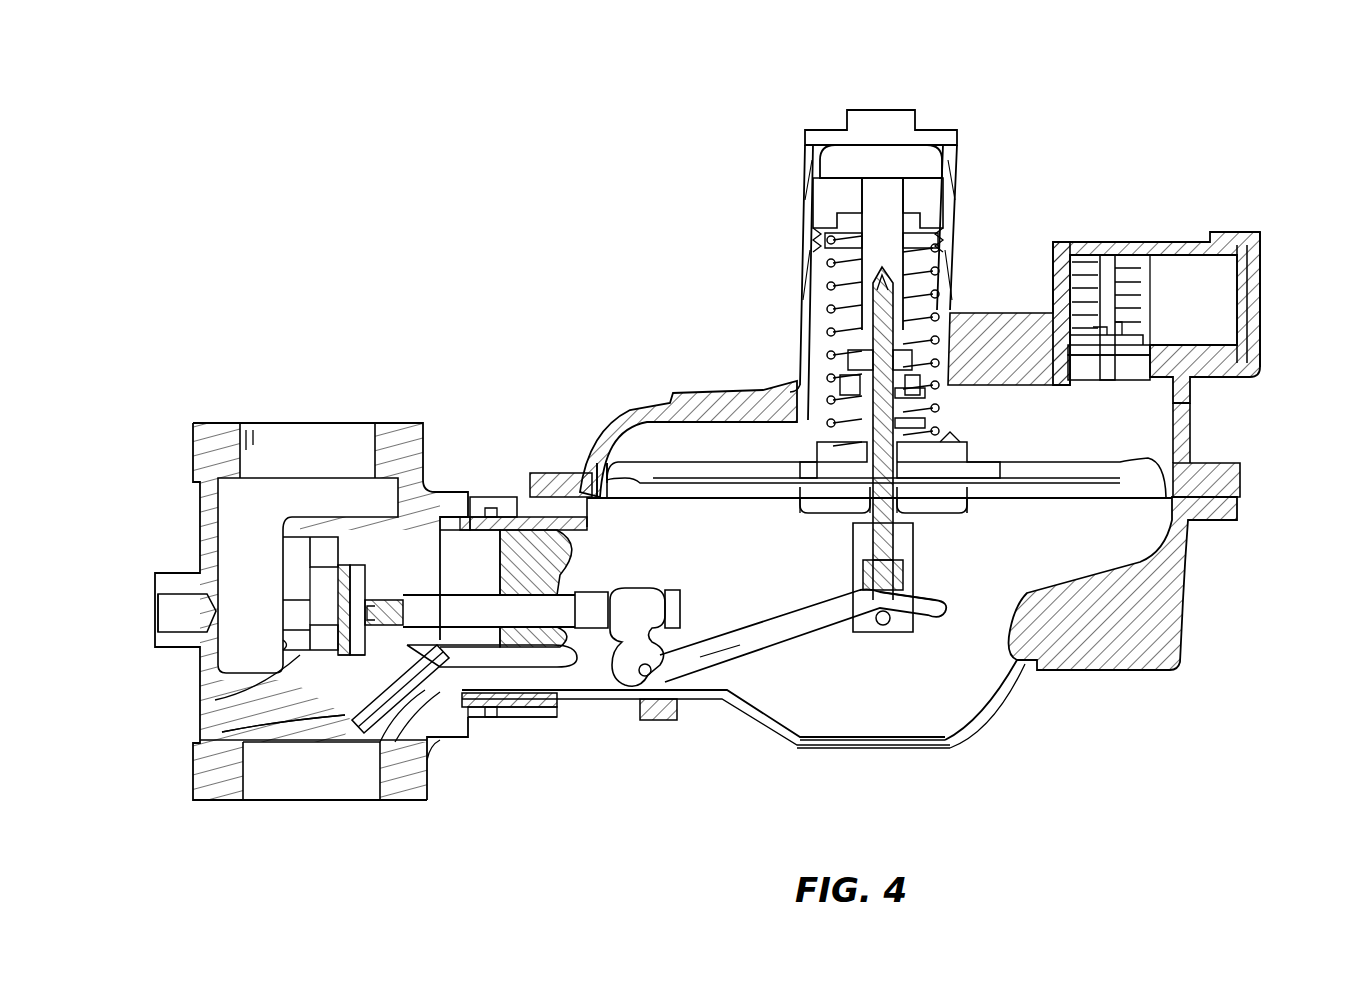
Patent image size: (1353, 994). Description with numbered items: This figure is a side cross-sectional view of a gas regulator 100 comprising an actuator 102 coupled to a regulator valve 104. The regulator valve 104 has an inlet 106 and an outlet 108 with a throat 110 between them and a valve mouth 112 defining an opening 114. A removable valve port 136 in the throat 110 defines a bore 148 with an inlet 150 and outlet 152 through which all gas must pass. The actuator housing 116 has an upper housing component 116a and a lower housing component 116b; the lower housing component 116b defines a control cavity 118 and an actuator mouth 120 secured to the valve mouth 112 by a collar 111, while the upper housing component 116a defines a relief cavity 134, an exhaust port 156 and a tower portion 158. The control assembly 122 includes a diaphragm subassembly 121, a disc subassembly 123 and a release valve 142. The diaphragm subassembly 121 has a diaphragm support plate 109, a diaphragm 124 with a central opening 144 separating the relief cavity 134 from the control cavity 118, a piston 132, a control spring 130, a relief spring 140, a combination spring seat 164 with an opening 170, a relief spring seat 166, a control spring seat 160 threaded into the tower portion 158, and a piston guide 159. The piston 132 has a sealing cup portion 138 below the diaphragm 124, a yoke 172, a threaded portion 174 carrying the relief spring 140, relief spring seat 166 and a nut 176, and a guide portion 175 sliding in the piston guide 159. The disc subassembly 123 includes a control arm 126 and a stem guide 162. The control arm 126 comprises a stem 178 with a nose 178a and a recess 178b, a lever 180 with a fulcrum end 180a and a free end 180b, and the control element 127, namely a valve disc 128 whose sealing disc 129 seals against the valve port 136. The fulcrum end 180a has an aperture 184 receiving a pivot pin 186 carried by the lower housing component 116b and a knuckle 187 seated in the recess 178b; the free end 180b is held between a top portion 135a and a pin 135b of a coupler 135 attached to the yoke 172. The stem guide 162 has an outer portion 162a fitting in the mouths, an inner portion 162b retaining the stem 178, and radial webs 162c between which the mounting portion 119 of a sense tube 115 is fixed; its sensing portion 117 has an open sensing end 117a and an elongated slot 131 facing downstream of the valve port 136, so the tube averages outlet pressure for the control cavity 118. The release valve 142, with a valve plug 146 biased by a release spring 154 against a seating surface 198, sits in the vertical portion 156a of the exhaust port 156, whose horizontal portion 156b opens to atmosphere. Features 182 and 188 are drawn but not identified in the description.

The gas regulator 100 is at (989, 107).
The actuator 102 is at (963, 186).
The regulator valve 104 is at (425, 417).
The inlet 106 is at (255, 445).
The outlet 108 is at (256, 775).
The diaphragm support plate 109 is at (720, 467).
The throat 110 is at (220, 697).
The collar 111 is at (490, 497).
The valve mouth 112 is at (440, 760).
The opening 114 is at (445, 560).
The sense tube 115 is at (422, 730).
The housing 116 is at (1180, 627).
The upper housing component 116a is at (805, 178).
The lower housing component 116b is at (958, 737).
The sensing portion 117 is at (445, 725).
The sensing end 117a is at (340, 737).
The control cavity 118 is at (985, 665).
The mounting portion 119 is at (520, 730).
The actuator mouth 120 is at (567, 730).
The diaphragm subassembly 121 is at (705, 499).
The control assembly 122 is at (955, 519).
The disc subassembly 123 is at (485, 712).
The diaphragm 124 is at (1160, 470).
The control arm 126 is at (642, 587).
The control element 127 is at (398, 745).
The valve disc 128 is at (358, 565).
The sealing disc 129 is at (358, 612).
The control spring 130 is at (863, 282).
The slot 131 is at (392, 712).
The piston 132 is at (880, 430).
The relief cavity 134 is at (1158, 403).
The coupler 135 is at (943, 580).
The top portion 135a is at (860, 576).
The pin 135b is at (883, 630).
The valve port 136 is at (195, 607).
The sealing cup portion 138 is at (968, 512).
The relief spring 140 is at (910, 393).
The release valve 142 is at (1140, 270).
The opening 144 is at (910, 423).
The valve plug 146 is at (1125, 372).
The bore 148 is at (280, 645).
The inlet 150 is at (300, 612).
The outlet 152 is at (340, 565).
The release spring 154 is at (1140, 318).
The exhaust port 156 is at (1252, 272).
The vertical portion 156a is at (1072, 325).
The horizontal portion 156b is at (1185, 285).
The tower portion 158 is at (825, 207).
The piston guide 159 is at (876, 197).
The control spring seat 160 is at (915, 220).
The stem guide 162 is at (585, 692).
The outer portion 162a is at (510, 535).
The inner portion 162b is at (552, 720).
The radial webs 162c is at (545, 560).
The combination spring seat 164 is at (820, 450).
The relief spring seat 166 is at (905, 360).
The opening 170 is at (850, 395).
The yoke 172 is at (900, 540).
The threaded portion 174 is at (880, 360).
The guide portion 175 is at (884, 300).
The nut 176 is at (866, 398).
The stem 178 is at (467, 580).
The nose 178a is at (400, 625).
The recess 178b is at (620, 590).
The lever 180 is at (800, 627).
The fulcrum end 180a is at (700, 665).
The free end 180b is at (932, 614).
The piston 182 is at (322, 552).
The aperture 184 is at (617, 702).
The pivot pin 186 is at (645, 670).
The knuckle 187 is at (655, 600).
The disc 188 is at (355, 645).
The seating surface 198 is at (1165, 352).